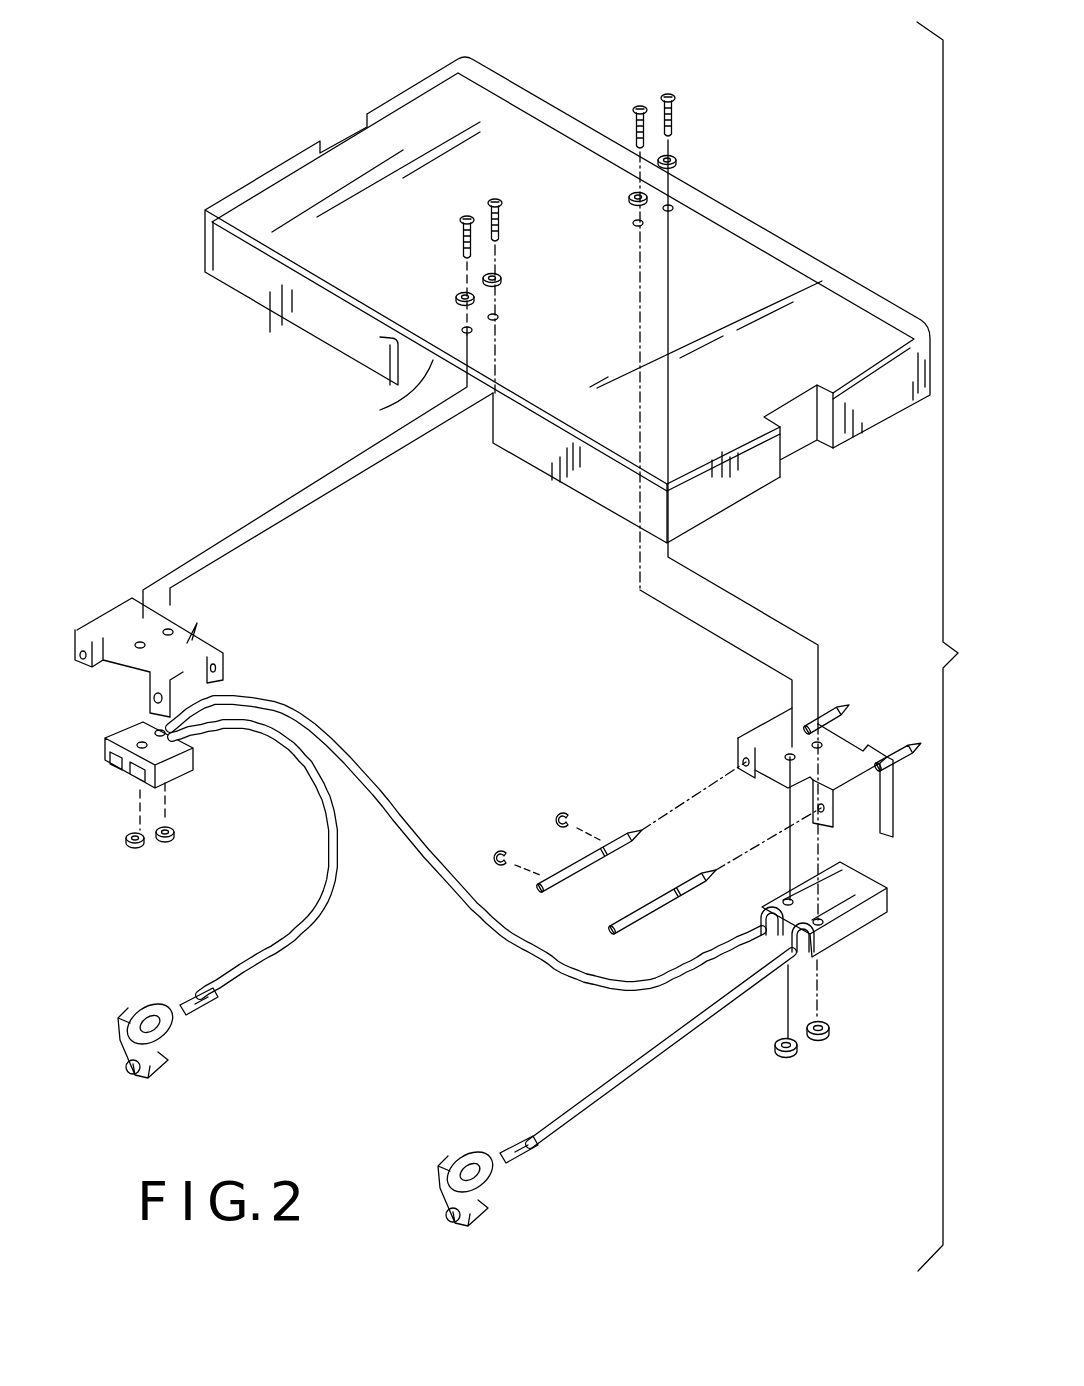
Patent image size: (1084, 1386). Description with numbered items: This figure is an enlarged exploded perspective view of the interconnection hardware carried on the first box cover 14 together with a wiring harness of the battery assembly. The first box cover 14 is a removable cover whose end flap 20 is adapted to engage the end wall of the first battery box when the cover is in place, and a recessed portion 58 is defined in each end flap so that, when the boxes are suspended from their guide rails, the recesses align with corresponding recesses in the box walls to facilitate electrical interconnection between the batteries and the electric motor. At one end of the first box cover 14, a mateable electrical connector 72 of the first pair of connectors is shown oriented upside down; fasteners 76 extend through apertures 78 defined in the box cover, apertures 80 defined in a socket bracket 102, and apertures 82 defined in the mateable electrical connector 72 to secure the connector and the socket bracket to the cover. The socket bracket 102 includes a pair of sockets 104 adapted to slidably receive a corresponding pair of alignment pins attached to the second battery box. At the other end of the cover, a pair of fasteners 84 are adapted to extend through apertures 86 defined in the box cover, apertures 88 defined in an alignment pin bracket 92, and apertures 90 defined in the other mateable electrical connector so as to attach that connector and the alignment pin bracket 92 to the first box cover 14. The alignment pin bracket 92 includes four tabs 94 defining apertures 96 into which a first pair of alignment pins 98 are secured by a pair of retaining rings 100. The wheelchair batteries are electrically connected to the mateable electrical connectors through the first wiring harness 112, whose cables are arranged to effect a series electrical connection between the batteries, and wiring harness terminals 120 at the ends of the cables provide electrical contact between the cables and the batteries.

The first box cover 14 is at (457, 105).
The end flap 20 is at (255, 283).
The recessed portion 58 is at (380, 410).
The mateable electrical connector 72 is at (177, 772).
The fasteners 76 is at (488, 204).
The apertures 78 is at (498, 318).
The apertures 80 is at (145, 645).
The apertures 82 is at (165, 733).
The fasteners 84 is at (664, 94).
The apertures 86 is at (646, 224).
The apertures 88 is at (796, 754).
The apertures 90 is at (783, 902).
The alignment pin bracket 92 is at (768, 720).
The tabs 94 is at (737, 752).
The apertures 96 is at (745, 766).
The alignment pins 98 is at (577, 868).
The retaining rings 100 is at (556, 818).
The socket bracket 102 is at (107, 608).
The sockets 104 is at (92, 665).
The first wiring harness 112 is at (603, 1039).
The wiring harness terminals 120 is at (180, 1047).